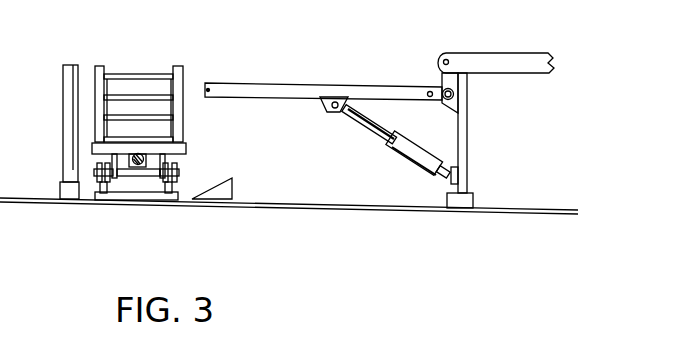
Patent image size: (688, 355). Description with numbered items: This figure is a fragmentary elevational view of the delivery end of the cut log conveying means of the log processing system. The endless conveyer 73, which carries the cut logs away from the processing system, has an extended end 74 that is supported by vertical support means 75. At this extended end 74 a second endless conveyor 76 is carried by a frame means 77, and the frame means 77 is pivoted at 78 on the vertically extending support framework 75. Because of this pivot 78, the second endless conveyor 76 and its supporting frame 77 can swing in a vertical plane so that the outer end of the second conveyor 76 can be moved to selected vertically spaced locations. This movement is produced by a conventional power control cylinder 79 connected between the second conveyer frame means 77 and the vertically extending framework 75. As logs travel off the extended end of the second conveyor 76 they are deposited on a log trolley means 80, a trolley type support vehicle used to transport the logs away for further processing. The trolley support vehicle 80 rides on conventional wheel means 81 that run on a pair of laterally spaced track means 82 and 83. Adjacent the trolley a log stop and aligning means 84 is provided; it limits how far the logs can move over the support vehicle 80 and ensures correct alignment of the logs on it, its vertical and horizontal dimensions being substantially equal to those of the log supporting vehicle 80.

The endless conveyer 73 is at (437, 63).
The extended end 74 is at (267, 86).
The vertical support means 75 is at (466, 142).
The second endless conveyor 76 is at (207, 88).
The frame means 77 is at (309, 100).
The pivot 78 is at (456, 96).
The power control cylinder 79 is at (414, 162).
The log trolley means 80 is at (108, 70).
The wheel means 81 is at (178, 181).
The track means 82 is at (105, 185).
The track means 83 is at (170, 196).
The log stop and aligning means 84 is at (66, 66).